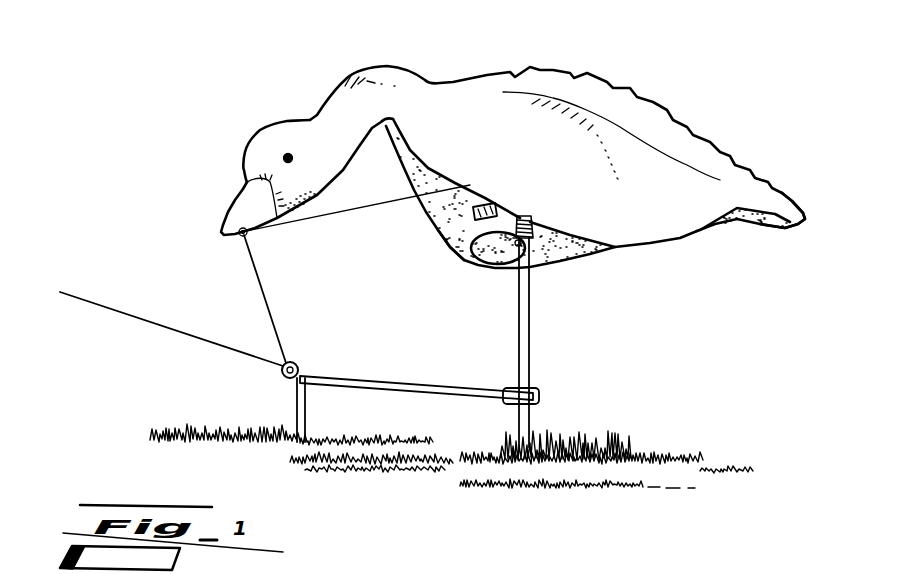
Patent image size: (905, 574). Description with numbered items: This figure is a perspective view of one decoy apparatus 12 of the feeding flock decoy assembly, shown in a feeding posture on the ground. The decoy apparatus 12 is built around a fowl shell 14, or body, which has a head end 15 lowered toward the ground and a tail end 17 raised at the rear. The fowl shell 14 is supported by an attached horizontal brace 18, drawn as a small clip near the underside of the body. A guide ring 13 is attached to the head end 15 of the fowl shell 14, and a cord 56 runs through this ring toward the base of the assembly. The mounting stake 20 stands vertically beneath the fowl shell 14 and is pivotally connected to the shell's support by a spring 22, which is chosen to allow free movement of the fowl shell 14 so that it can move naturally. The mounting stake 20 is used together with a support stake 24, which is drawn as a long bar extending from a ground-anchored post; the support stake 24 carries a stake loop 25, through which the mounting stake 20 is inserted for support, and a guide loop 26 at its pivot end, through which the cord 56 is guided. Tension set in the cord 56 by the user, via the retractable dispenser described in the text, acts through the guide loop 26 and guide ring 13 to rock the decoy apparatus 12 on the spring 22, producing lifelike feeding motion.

The decoy apparatus 12 is at (234, 80).
The guide ring 13 is at (239, 234).
The fowl shell 14 is at (530, 151).
The head end 15 is at (242, 162).
The tail end 17 is at (789, 190).
The horizontal brace 18 is at (440, 233).
The mounting stake 20 is at (533, 295).
The spring 22 is at (469, 264).
The support stake 24 is at (355, 375).
The stake loop 25 is at (533, 390).
The guide loop 26 is at (307, 350).
The cord 56 is at (181, 331).